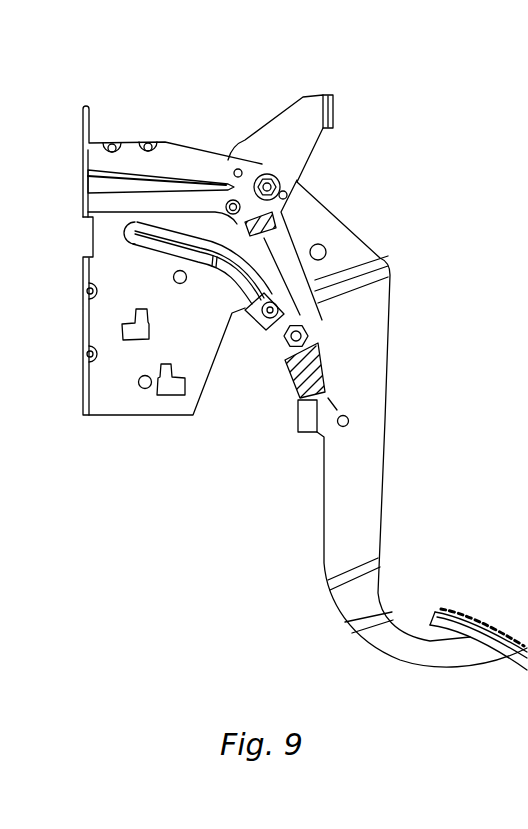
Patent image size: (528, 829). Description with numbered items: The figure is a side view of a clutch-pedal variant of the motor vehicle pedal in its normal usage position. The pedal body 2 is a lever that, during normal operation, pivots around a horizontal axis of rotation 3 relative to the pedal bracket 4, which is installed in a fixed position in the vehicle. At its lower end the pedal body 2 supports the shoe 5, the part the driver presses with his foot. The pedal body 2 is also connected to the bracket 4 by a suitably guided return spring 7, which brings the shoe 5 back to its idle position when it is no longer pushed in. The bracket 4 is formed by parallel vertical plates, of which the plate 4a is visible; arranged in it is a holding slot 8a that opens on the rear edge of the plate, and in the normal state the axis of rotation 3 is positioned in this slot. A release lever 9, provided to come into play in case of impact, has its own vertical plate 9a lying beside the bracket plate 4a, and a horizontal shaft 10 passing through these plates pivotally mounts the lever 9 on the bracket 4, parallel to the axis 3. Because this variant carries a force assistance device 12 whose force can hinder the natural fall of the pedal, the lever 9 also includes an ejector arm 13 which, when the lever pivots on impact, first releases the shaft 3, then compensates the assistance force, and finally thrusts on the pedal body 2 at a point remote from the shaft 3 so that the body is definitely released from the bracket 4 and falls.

The pedal body 2 is at (355, 598).
The axis of rotation 3 is at (283, 183).
The pedal bracket 4 is at (172, 152).
The vertical plate 4a is at (124, 392).
The shoe 5 is at (513, 650).
The return spring 7 is at (287, 382).
The holding slot 8a is at (290, 165).
The release lever 9 is at (304, 86).
The vertical plate 9a is at (283, 133).
The horizontal shaft 10 is at (100, 203).
The force assistance device 12 is at (268, 361).
The ejector arm 13 is at (278, 217).